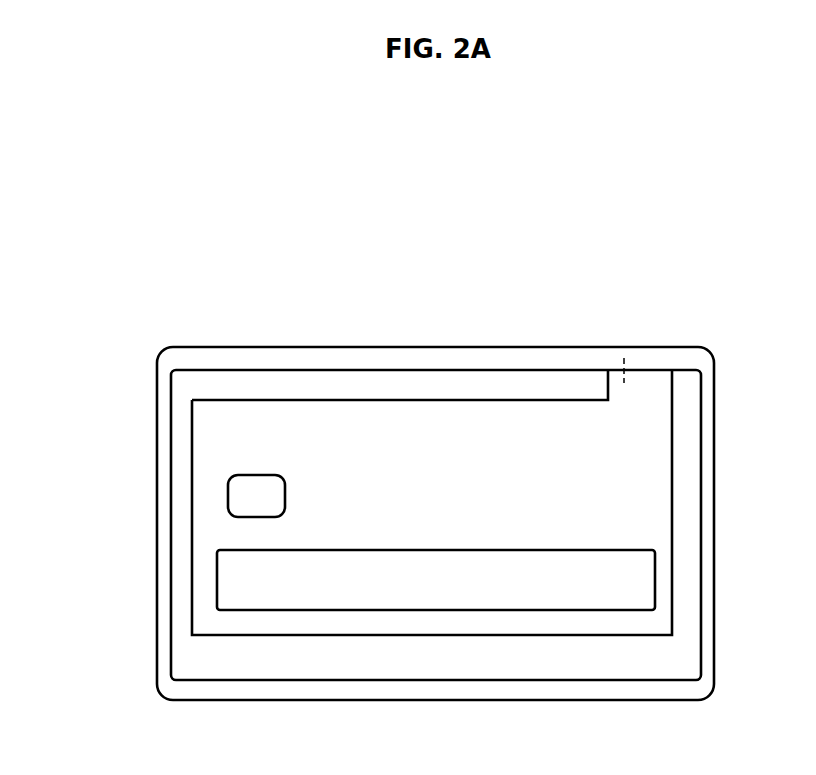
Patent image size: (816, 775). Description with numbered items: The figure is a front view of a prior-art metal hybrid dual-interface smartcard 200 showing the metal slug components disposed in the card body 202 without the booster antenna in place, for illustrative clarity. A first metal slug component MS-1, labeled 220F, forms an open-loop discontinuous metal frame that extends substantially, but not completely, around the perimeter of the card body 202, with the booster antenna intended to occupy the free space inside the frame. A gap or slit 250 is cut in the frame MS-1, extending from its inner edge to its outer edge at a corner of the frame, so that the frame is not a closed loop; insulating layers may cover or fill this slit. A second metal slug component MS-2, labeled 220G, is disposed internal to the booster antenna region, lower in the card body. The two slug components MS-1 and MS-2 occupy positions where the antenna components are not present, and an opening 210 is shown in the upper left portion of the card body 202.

The metal hybrid dual-interface smartcard 200 is at (152, 196).
The card body 202 is at (250, 340).
The opening 210 is at (220, 492).
The metal slug component 220F is at (533, 376).
The second metal slug component 220G is at (482, 534).
The slit 250 is at (645, 390).
The first metal slug component MS-1 is at (436, 525).
The second metal slug component MS-2 is at (436, 580).